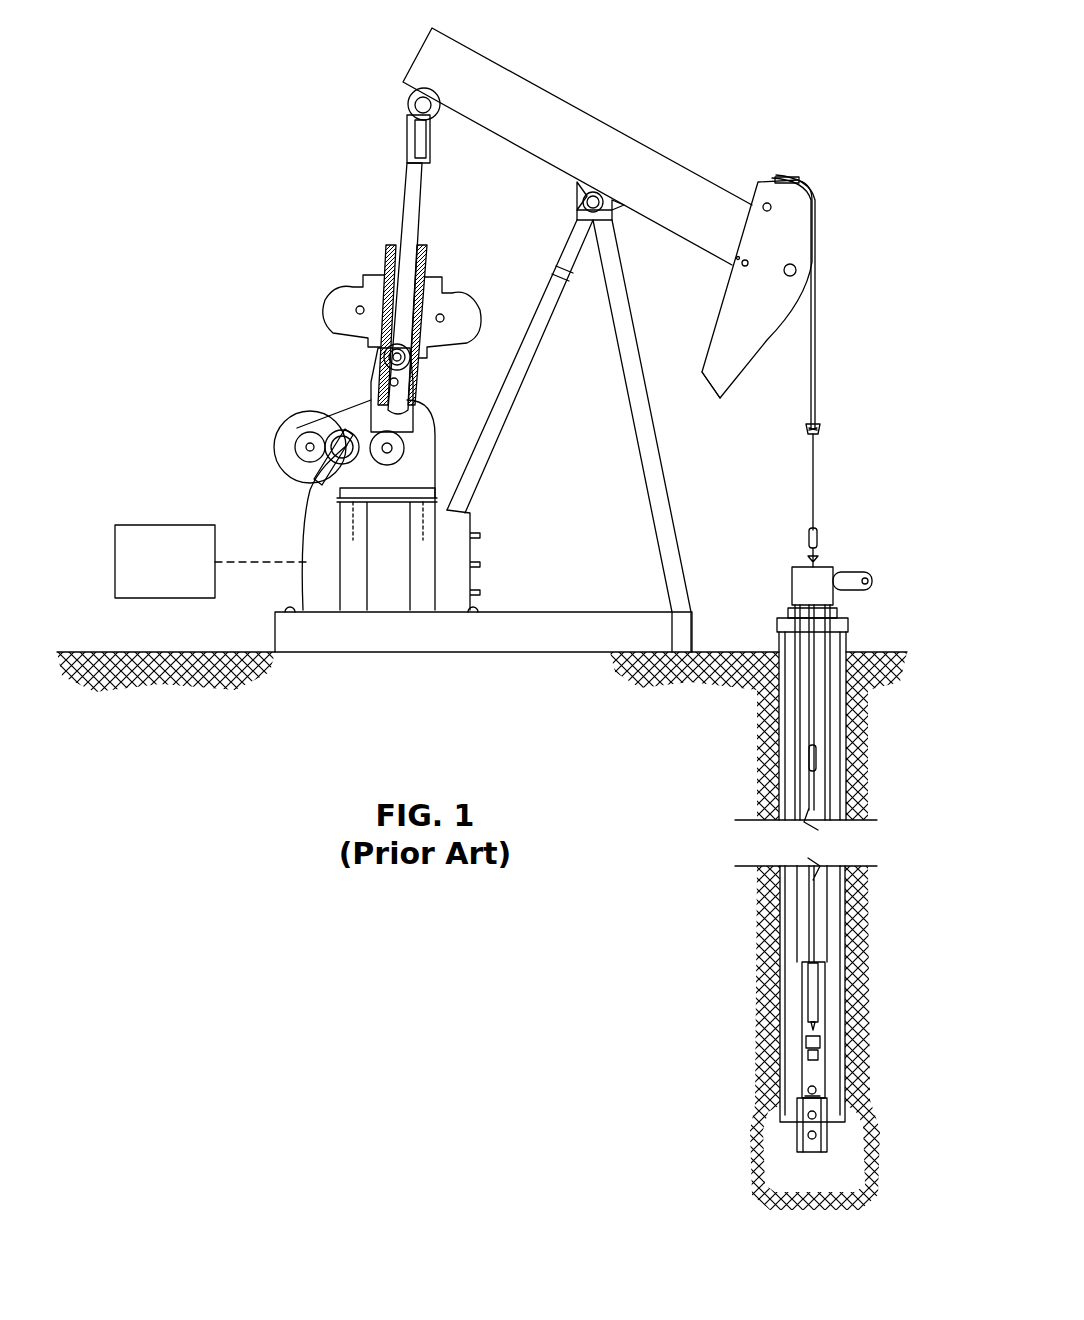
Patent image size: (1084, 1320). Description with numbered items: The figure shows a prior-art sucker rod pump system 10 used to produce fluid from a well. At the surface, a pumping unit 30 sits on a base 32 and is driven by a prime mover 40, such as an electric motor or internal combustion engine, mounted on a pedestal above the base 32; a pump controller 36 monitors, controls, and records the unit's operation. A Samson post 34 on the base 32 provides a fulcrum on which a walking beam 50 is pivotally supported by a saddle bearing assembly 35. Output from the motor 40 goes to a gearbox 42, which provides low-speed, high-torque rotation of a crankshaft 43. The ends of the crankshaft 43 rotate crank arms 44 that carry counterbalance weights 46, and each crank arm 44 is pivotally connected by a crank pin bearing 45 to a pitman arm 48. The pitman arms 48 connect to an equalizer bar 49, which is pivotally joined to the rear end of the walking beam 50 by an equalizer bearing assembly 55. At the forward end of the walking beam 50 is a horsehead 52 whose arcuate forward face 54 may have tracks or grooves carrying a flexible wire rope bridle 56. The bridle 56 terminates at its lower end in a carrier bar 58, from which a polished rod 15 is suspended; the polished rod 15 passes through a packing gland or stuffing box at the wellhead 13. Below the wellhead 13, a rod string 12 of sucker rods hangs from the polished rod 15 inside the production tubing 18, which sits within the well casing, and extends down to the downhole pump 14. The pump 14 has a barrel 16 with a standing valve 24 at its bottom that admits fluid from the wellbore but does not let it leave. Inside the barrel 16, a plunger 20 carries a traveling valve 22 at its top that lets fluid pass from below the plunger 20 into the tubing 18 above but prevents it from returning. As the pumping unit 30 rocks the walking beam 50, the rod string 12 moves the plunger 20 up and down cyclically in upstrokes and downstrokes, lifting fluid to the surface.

The sucker rod pump system 10 is at (867, 114).
The rod string 12 is at (806, 690).
The wellhead 13 is at (828, 566).
The downhole pump 14 is at (824, 938).
The polished rod 15 is at (815, 486).
The barrel 16 is at (802, 1003).
The production tubing 18 is at (830, 784).
The plunger 20 is at (820, 1035).
The traveling valve 22 is at (830, 1058).
The standing valve 24 is at (830, 1086).
The pumping unit 30 is at (224, 204).
The base 32 is at (600, 611).
The Samson post 34 is at (690, 572).
The saddle bearing assembly 35 is at (582, 206).
The pump controller 36 is at (136, 524).
The prime mover 40 is at (282, 438).
The gearbox 42 is at (345, 405).
The crankshaft 43 is at (394, 448).
The crank arm 44 is at (372, 365).
The crank pin bearing 45 is at (410, 362).
The counterbalance weight 46 is at (320, 310).
The pitman arm 48 is at (432, 214).
The equalizer bar 49 is at (406, 138).
The walking beam 50 is at (620, 118).
The horsehead 52 is at (720, 399).
The arcuate forward face 54 is at (800, 287).
The equalizer bearing assembly 55 is at (410, 103).
The wire rope bridle 56 is at (816, 362).
The carrier bar 58 is at (822, 430).